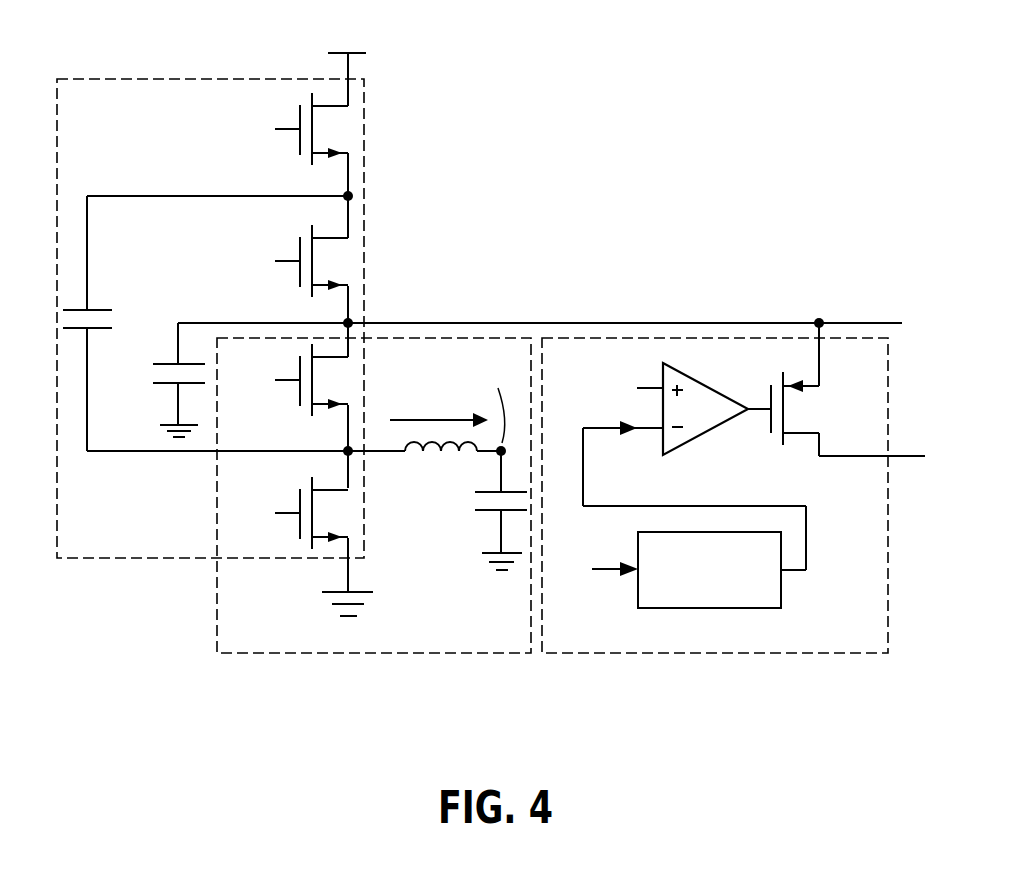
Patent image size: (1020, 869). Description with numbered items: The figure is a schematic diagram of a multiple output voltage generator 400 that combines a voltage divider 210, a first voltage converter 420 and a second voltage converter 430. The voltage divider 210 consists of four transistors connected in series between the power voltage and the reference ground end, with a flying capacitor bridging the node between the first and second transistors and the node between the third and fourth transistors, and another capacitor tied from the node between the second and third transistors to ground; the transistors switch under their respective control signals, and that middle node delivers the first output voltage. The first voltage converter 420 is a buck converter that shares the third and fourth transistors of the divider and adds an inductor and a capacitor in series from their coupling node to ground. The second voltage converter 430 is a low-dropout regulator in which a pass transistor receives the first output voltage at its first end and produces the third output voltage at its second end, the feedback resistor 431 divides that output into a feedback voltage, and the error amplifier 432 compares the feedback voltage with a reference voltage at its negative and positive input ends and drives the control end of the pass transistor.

The multiple output voltage generator 400 is at (515, 366).
The voltage divider 210 is at (167, 78).
The first voltage converter 420 is at (418, 653).
The second voltage converter 430 is at (757, 485).
The feedback resistor 431 is at (781, 586).
The error amplifier 432 is at (708, 383).